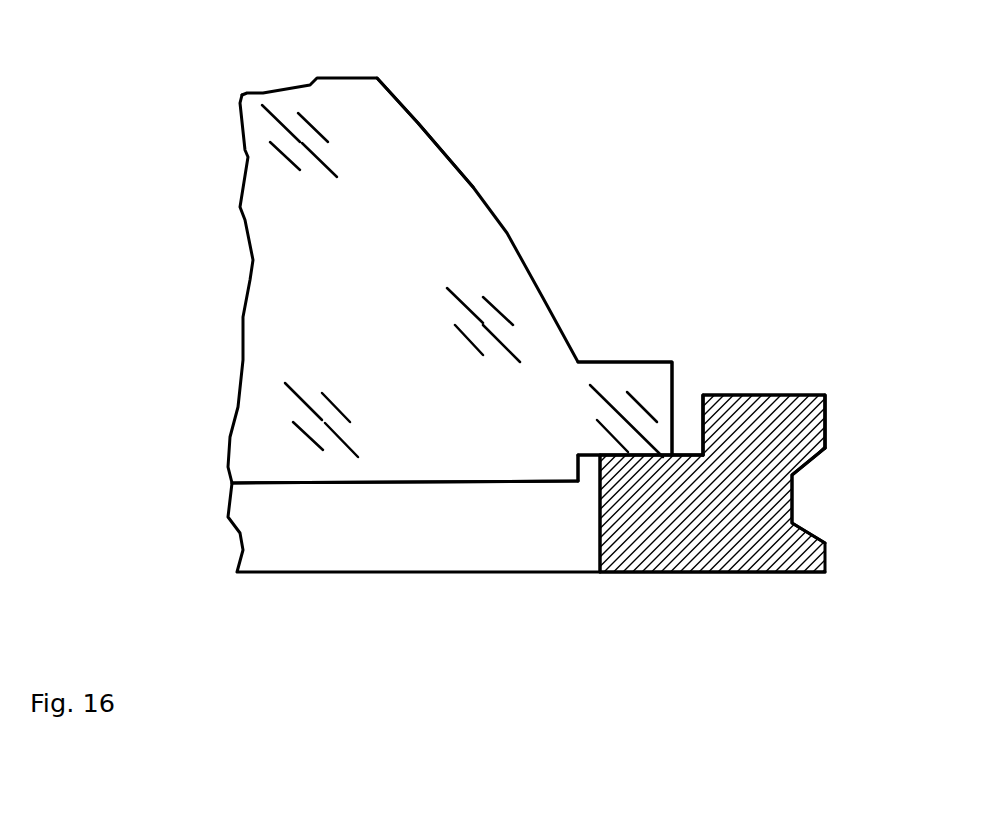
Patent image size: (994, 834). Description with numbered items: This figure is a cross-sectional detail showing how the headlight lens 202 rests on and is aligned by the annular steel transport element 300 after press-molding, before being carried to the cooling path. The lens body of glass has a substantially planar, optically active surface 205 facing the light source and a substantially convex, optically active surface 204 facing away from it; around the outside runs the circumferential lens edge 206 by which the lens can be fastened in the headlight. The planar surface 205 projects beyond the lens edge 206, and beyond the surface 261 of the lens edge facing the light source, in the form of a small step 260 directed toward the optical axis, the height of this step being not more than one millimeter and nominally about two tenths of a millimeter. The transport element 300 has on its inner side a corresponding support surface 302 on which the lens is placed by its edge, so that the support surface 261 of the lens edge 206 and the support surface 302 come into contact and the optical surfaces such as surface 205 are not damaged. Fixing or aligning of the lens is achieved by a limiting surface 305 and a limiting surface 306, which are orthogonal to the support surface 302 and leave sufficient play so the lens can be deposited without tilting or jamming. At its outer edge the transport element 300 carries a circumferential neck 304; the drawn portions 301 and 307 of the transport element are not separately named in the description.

The headlight lens 202 is at (472, 134).
The convex surface 204 is at (418, 123).
The planar surface 205 is at (348, 485).
The lens edge 206 is at (607, 377).
The step 260 is at (577, 472).
The support surface of the lens edge 261 is at (590, 458).
The transport element 300 is at (414, 545).
The frame flange 301 is at (798, 430).
The support surface 302 is at (690, 455).
The neck 304 is at (823, 500).
The limiting surface 305 is at (601, 527).
The limiting surface 306 is at (706, 432).
The outer surface of flange 307 is at (826, 421).